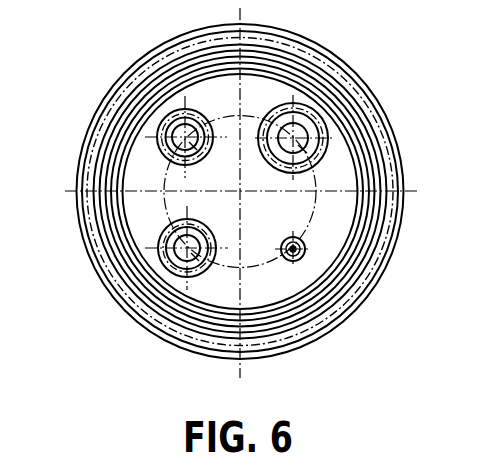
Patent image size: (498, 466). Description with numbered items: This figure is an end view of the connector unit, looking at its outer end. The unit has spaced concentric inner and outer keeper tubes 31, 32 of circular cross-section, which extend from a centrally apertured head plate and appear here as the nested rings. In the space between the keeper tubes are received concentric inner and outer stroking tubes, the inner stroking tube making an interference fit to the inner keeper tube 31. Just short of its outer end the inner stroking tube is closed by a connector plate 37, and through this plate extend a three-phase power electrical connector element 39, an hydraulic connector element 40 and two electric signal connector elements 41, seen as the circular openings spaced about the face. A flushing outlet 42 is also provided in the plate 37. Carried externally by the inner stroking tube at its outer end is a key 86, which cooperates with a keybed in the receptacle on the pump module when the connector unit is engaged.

The inner keeper tube 31 is at (155, 99).
The outer keeper tube 32 is at (132, 97).
The connector plate 37 is at (330, 225).
The three-phase power electrical connector element 39 is at (310, 123).
The hydraulic connector element 40 is at (305, 256).
The electric signal connector elements 41 is at (168, 237).
The flushing outlet 42 is at (314, 181).
The key 86 is at (240, 51).